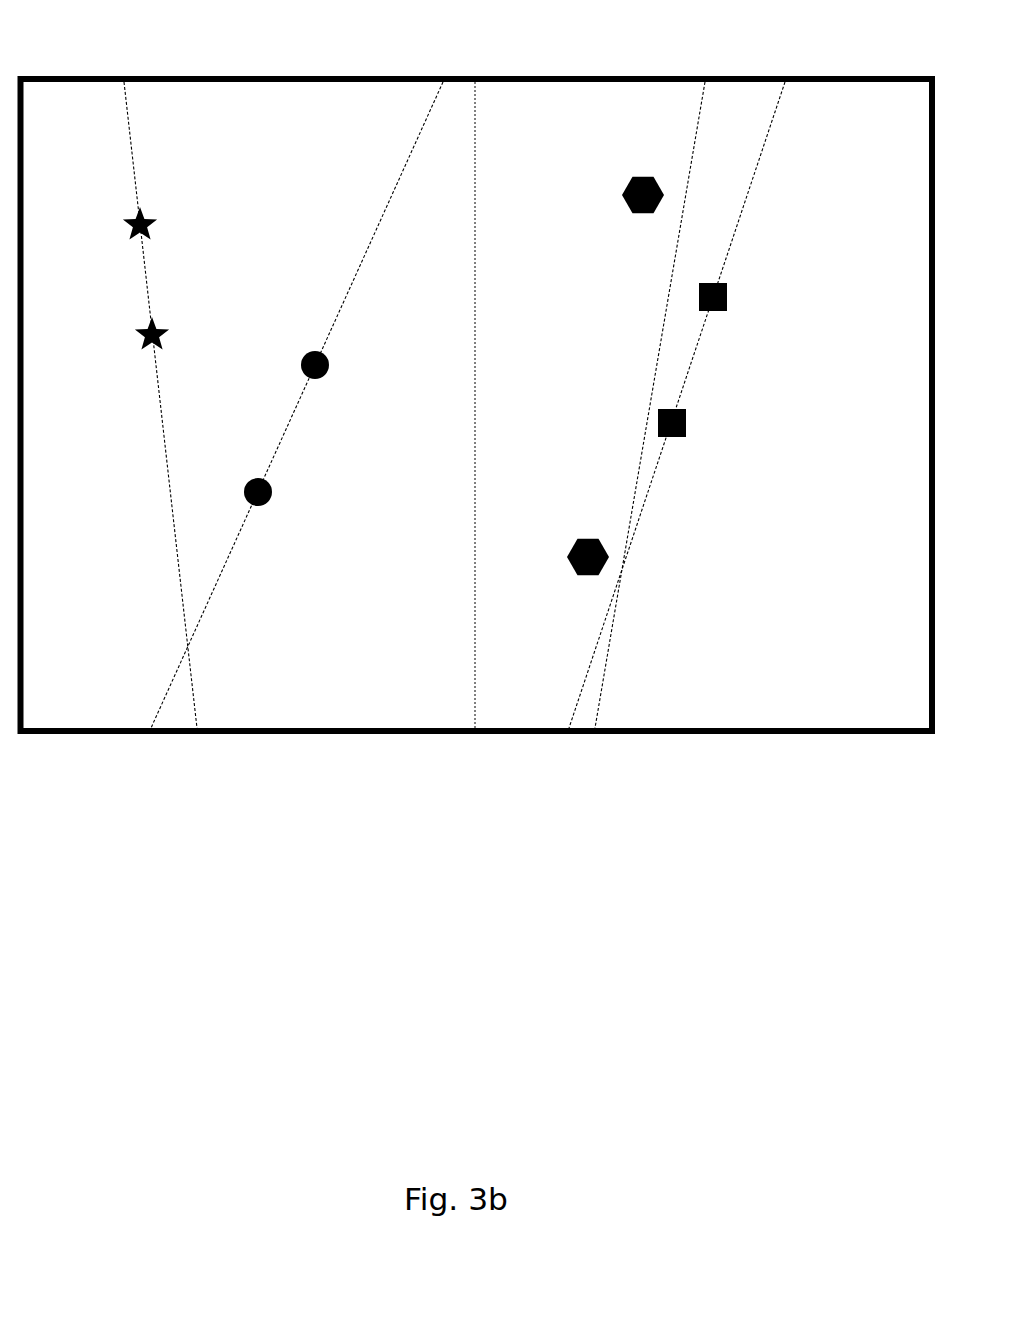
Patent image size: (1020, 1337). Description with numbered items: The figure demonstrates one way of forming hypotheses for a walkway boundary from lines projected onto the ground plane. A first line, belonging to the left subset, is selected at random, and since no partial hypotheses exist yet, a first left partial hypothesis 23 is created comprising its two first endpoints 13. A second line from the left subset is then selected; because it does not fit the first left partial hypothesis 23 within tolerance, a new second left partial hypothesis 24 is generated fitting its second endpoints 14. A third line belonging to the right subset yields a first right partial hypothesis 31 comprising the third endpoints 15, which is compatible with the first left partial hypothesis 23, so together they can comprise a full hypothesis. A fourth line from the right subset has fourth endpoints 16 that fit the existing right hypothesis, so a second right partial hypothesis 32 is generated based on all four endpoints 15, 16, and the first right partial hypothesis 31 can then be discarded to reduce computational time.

The first endpoints 13 is at (262, 455).
The second endpoints 14 is at (173, 301).
The third endpoints 15 is at (700, 386).
The fourth endpoints 16 is at (580, 499).
The first left partial hypothesis 23 is at (246, 583).
The second left partial hypothesis 24 is at (167, 568).
The first right partial hypothesis 31 is at (665, 495).
The second right partial hypothesis 32 is at (620, 660).